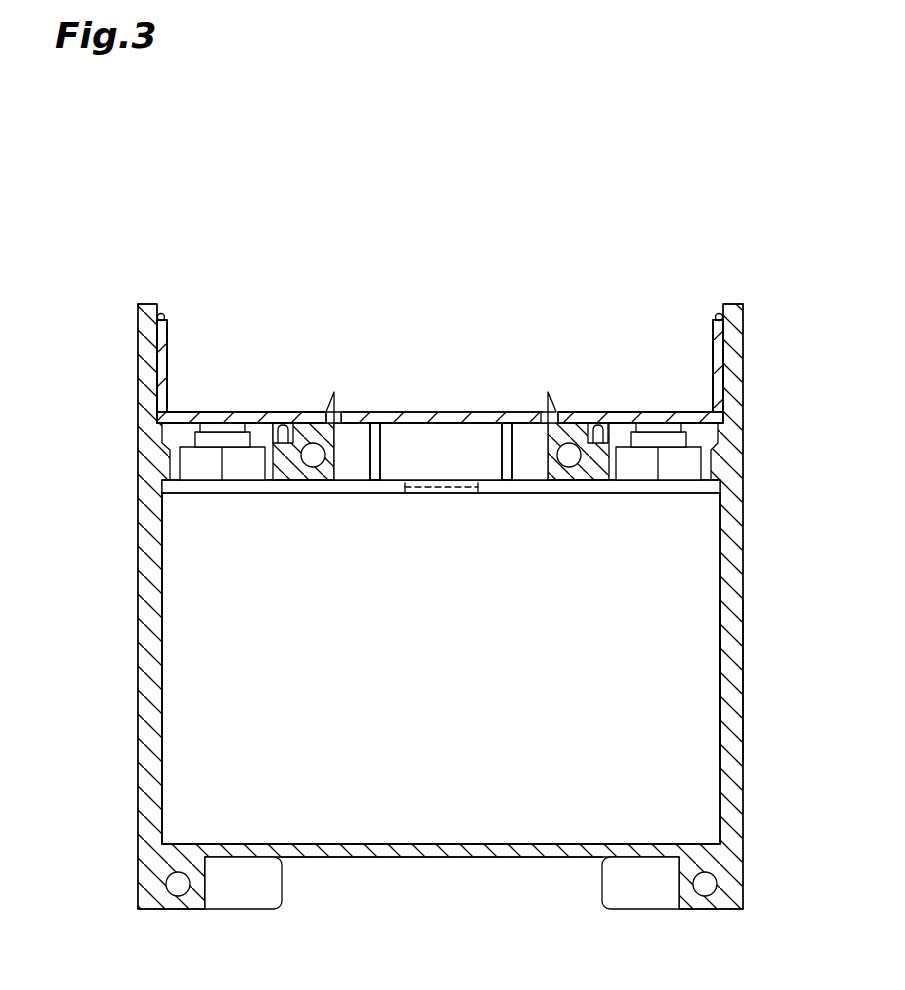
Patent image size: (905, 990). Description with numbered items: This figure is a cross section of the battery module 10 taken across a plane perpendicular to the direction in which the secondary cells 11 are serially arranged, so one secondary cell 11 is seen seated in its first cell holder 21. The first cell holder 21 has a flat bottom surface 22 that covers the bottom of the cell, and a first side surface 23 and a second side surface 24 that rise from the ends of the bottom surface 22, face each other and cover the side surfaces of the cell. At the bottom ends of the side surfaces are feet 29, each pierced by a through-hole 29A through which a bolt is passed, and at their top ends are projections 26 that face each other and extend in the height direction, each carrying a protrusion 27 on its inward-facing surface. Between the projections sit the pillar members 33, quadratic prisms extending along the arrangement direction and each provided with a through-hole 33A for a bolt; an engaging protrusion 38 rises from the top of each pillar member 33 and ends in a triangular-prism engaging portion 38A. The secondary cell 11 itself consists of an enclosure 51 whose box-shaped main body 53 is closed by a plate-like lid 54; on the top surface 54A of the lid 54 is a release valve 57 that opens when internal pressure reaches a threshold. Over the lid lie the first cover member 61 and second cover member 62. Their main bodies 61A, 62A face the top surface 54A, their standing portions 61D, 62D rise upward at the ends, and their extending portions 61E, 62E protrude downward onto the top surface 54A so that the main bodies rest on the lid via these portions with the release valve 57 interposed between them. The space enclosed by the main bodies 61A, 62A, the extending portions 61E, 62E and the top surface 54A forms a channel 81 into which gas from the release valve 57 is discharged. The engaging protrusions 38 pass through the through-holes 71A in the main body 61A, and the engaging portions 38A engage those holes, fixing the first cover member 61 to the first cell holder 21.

The battery module 10 is at (93, 246).
The secondary cell 11 is at (733, 682).
The first cell holder 21 is at (742, 604).
The bottom surface 22 is at (468, 858).
The first side surface 23 is at (738, 743).
The second side surface 24 is at (150, 683).
The projection 26 is at (150, 352).
The protrusion 27 is at (165, 316).
The foot 29 is at (140, 876).
The through-hole 29A is at (178, 896).
The pillar member 33 is at (290, 476).
The through-hole 33A is at (315, 457).
The engaging protrusion 38 is at (335, 400).
The engaging portion 38A is at (324, 408).
The enclosure 51 is at (501, 610).
The main body 53 is at (709, 541).
The lid 54 is at (713, 488).
The top surface 54A is at (487, 479).
The release valve 57 is at (443, 493).
The first cover member 61 is at (412, 412).
The second cover member 62 is at (412, 412).
The main body 61A is at (188, 416).
The main body 62A is at (188, 416).
The standing portion 61D is at (168, 340).
The standing portion 62D is at (168, 340).
The extending portion 61E is at (374, 472).
The extending portion 62E is at (374, 472).
The through-hole 71A is at (327, 416).
The channel 81 is at (458, 466).